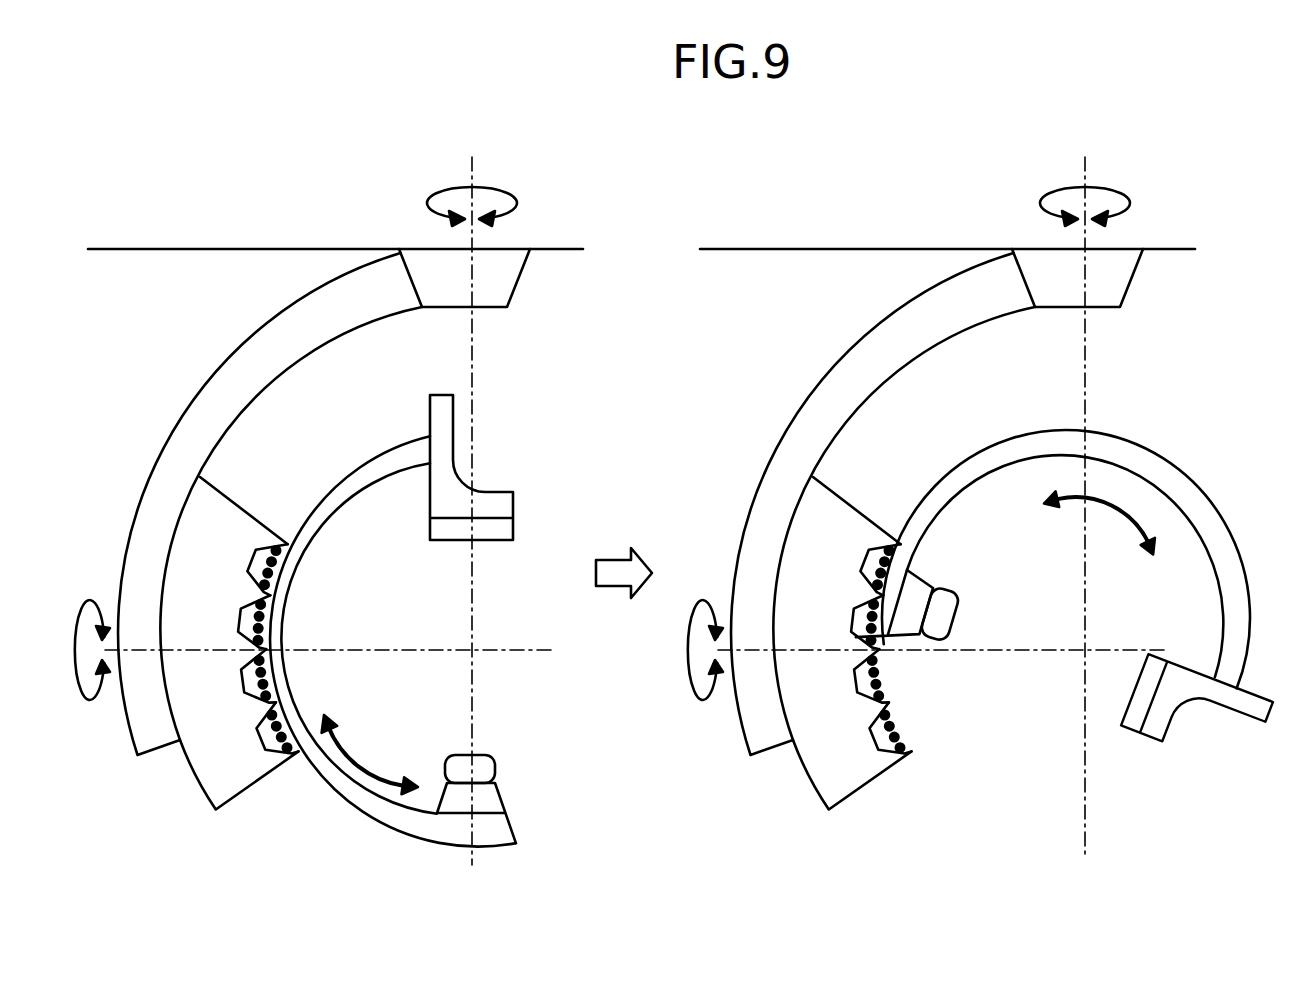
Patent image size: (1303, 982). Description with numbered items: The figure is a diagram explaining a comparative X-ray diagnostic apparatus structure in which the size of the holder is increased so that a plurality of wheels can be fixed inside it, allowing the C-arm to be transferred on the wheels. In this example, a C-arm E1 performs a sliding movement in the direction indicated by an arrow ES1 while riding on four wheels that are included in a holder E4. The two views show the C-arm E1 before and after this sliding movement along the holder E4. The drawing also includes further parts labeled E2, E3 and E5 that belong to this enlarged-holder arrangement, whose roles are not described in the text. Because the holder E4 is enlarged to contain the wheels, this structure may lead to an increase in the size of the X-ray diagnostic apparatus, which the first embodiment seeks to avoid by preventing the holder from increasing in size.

The C-arm E1 is at (356, 822).
The outer arc member E2 is at (203, 386).
The engagement teeth E3 is at (267, 622).
The holder E4 is at (208, 795).
The pivot support E5 is at (518, 288).
The arrow ES1 is at (370, 772).